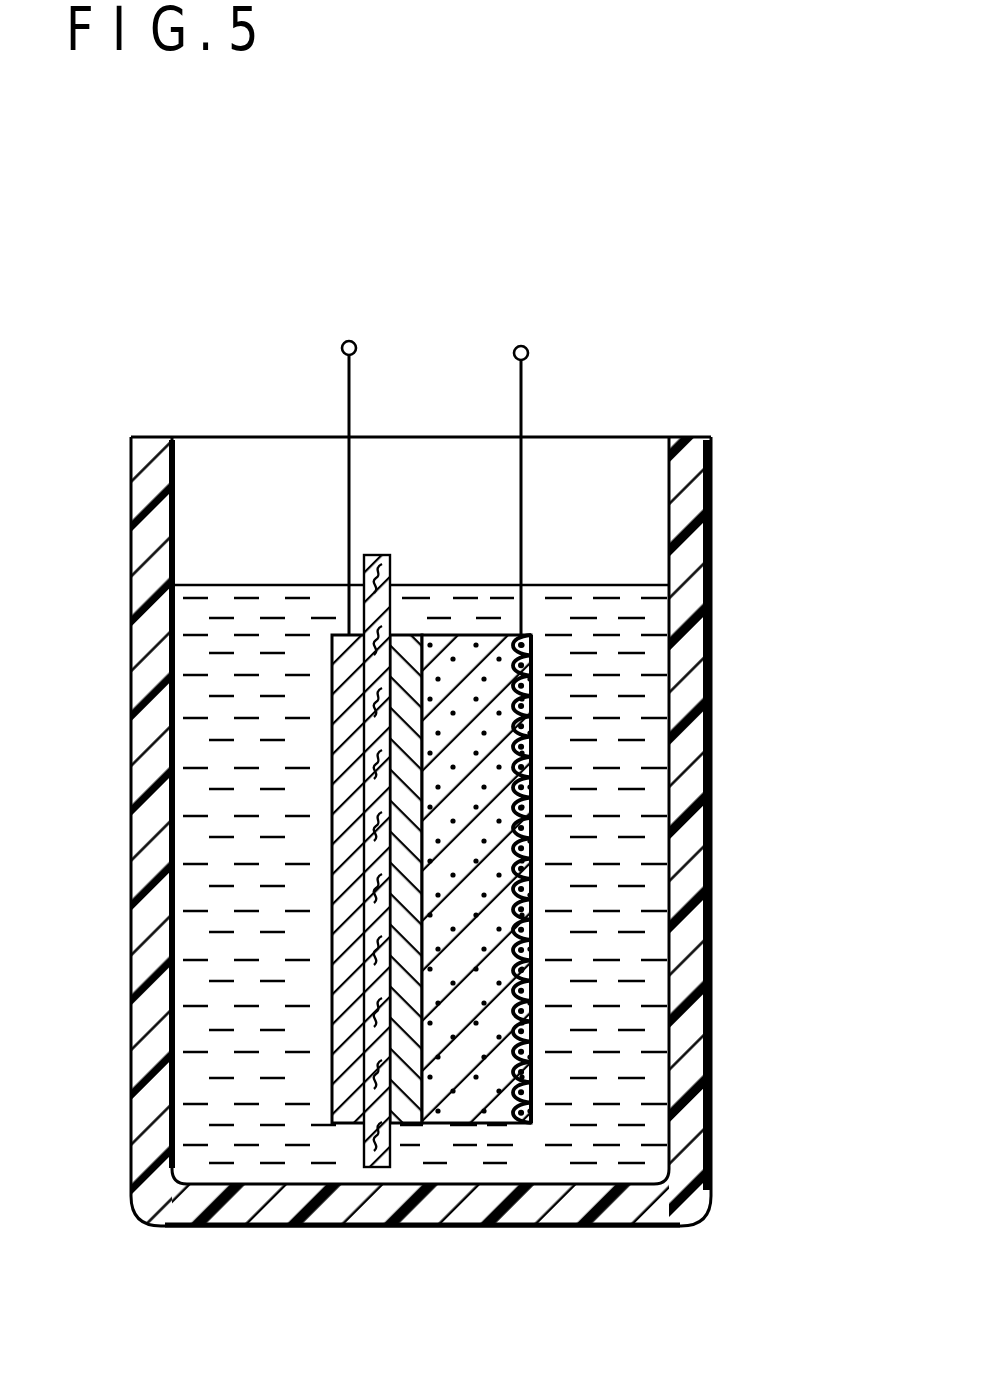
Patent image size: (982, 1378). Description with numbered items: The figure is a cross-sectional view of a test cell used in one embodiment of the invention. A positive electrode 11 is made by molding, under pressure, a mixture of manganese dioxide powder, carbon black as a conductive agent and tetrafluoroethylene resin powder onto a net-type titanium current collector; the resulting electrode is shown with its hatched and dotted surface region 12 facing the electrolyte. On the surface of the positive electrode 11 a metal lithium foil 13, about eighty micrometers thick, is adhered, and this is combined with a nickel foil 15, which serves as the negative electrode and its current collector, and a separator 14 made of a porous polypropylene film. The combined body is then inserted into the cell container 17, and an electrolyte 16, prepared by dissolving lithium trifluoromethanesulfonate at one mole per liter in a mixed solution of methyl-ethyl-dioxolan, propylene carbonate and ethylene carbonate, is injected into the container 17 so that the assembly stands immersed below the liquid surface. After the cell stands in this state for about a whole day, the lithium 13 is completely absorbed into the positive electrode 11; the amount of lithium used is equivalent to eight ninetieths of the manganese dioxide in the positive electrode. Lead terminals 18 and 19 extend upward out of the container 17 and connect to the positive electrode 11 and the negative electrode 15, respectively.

The positive electrode 11 is at (472, 1090).
The porous surface layer of positive electrode 12 is at (533, 755).
The metal lithium foil 13 is at (405, 1098).
The separator 14 is at (375, 1143).
The nickel foil 15 is at (345, 933).
The electrolyte 16 is at (593, 585).
The cell container 17 is at (148, 675).
The lead terminal 18 is at (521, 346).
The lead terminal 19 is at (349, 341).